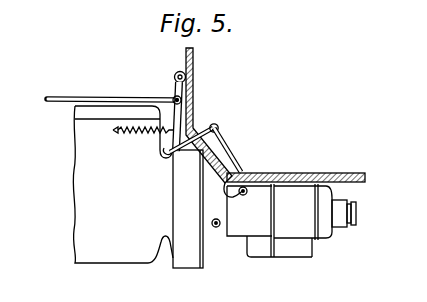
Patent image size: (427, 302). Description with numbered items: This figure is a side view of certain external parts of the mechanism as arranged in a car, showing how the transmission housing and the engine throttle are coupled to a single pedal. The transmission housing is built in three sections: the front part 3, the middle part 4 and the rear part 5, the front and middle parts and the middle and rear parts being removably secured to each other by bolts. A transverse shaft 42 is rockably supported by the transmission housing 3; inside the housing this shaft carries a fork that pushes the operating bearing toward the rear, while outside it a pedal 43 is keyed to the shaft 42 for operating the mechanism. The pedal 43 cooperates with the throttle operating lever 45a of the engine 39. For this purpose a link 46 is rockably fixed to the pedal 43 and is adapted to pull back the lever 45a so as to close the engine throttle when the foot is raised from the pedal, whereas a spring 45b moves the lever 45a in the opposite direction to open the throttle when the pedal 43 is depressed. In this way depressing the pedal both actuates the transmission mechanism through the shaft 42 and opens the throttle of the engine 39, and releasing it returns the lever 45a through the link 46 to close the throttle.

The front part of transmission housing 3 is at (269, 220).
The middle part of transmission housing 4 is at (303, 220).
The rear part of transmission housing 5 is at (329, 238).
The engine 39 is at (92, 178).
The transverse shaft 42 is at (247, 186).
The pedal 43 is at (234, 160).
The throttle operating lever 45a is at (181, 114).
The spring 45b is at (143, 141).
The link 46 is at (196, 151).